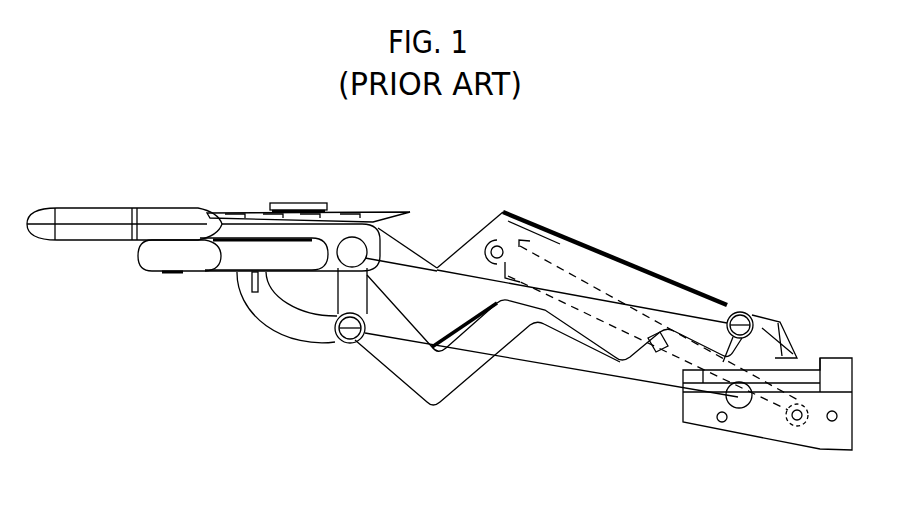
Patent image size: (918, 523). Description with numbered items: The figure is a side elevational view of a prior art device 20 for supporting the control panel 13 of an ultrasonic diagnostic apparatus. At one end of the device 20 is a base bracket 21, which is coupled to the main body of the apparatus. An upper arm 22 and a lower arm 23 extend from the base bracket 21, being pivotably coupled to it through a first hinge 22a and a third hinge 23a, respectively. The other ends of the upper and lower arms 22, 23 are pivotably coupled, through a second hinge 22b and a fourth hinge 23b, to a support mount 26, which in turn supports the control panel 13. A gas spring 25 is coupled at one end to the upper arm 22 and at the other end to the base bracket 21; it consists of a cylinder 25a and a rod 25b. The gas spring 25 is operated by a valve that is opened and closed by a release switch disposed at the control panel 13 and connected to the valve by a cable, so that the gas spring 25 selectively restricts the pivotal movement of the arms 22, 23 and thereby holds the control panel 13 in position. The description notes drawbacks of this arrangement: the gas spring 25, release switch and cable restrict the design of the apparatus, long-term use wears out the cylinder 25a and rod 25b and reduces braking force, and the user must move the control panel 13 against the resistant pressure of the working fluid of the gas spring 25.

The control panel 13 is at (300, 212).
The device for supporting the control panel 20 is at (458, 232).
The base bracket 21 is at (838, 446).
The upper arm 22 is at (468, 310).
The first hinge 22a is at (740, 312).
The second hinge 22b is at (352, 250).
The lower arm 23 is at (508, 335).
The third hinge 23a is at (740, 312).
The fourth hinge 23b is at (347, 343).
The gas spring 25 is at (641, 288).
The cylinder 25a is at (582, 285).
The rod 25b is at (690, 330).
The support mount 26 is at (255, 225).